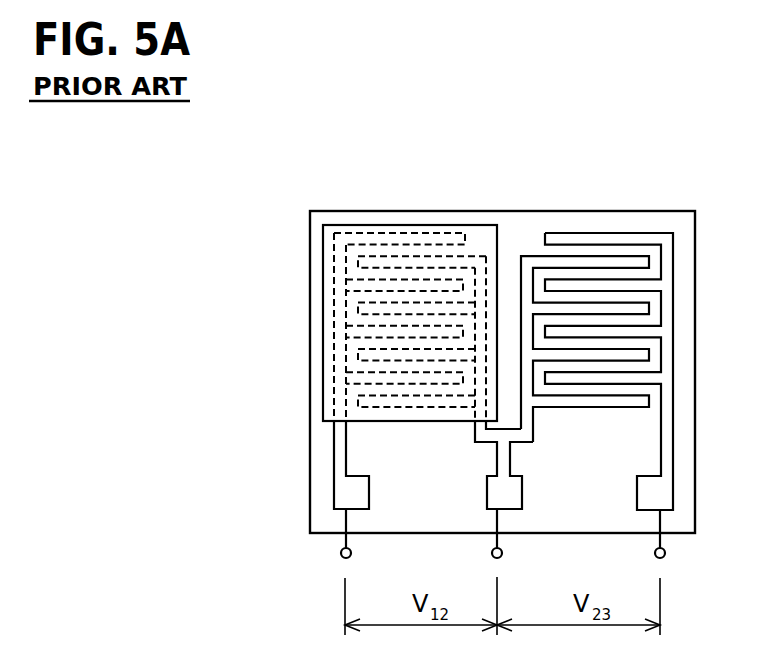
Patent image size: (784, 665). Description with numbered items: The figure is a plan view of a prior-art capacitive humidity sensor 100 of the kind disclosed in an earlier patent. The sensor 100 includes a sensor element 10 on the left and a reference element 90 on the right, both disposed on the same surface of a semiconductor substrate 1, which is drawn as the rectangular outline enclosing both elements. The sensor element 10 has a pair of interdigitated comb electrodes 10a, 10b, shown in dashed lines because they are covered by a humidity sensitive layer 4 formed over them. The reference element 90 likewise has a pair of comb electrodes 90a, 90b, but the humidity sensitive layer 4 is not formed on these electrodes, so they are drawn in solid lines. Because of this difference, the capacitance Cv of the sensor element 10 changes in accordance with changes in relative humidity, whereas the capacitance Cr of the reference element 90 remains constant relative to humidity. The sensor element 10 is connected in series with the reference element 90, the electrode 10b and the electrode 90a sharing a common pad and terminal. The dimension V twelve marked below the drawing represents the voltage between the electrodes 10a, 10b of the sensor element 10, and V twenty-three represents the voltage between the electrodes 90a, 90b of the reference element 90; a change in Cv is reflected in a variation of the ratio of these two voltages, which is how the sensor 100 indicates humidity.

The capacitive humidity sensor 100 is at (305, 198).
The semiconductor substrate 1 is at (607, 512).
The humidity sensitive layer 4 is at (328, 273).
The sensor element 10 is at (485, 200).
The comb electrode 10a is at (340, 413).
The comb electrode 10b is at (477, 413).
The reference element 90 is at (684, 200).
The comb electrode 90a is at (527, 415).
The comb electrode 90b is at (665, 409).